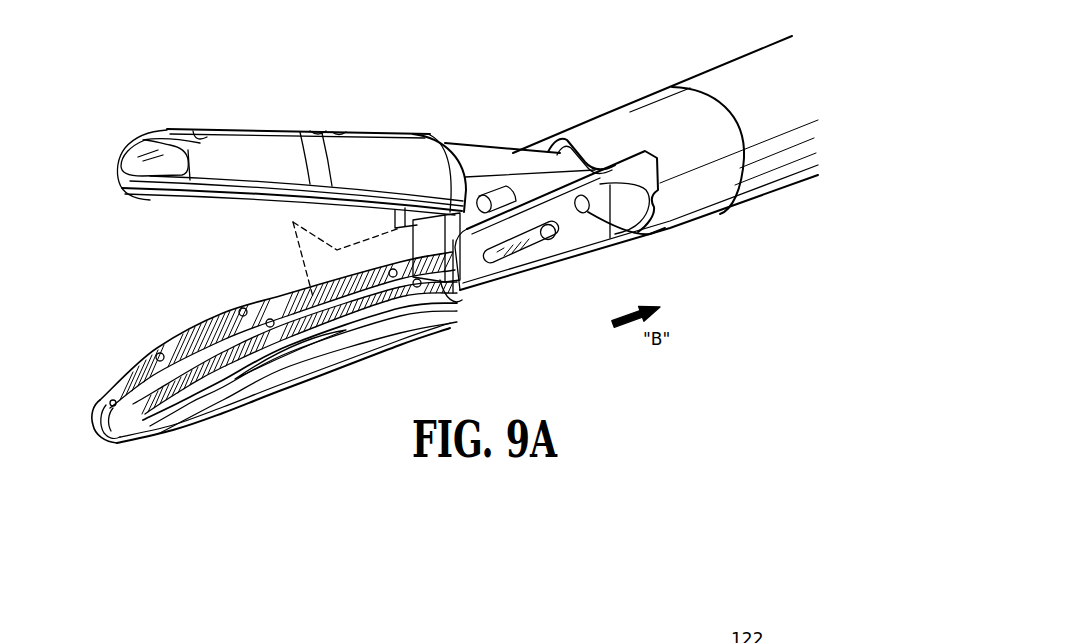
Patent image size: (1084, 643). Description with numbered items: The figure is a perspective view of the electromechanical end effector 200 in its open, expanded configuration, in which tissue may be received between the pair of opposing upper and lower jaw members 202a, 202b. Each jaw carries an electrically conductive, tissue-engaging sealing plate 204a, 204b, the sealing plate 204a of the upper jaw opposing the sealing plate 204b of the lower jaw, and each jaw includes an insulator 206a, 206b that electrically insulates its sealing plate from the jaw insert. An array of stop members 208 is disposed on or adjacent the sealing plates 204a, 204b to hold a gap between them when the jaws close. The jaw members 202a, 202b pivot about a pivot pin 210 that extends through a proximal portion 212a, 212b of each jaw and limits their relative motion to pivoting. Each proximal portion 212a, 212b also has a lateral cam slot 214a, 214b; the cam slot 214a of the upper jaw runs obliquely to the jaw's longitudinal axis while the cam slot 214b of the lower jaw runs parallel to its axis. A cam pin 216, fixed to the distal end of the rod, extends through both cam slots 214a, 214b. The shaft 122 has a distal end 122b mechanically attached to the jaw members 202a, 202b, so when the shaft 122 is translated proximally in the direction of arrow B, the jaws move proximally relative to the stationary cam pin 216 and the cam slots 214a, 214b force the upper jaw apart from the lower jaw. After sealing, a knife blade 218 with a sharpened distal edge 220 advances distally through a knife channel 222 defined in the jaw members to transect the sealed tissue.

The electromechanical end effector 200 is at (332, 82).
The upper jaw member 202a is at (223, 120).
The lower jaw member 202b is at (156, 446).
The sealing plate 204a is at (150, 200).
The sealing plate 204b is at (112, 388).
The insulator 206a is at (360, 133).
The insulator 206b is at (265, 373).
The stop members 208 is at (195, 330).
The pivot pin 210 is at (650, 235).
The proximal portion 212a is at (523, 187).
The proximal portion 212b is at (537, 262).
The lateral cam slot 214a is at (493, 190).
The lateral cam slot 214b is at (497, 257).
The cam pin 216 is at (588, 212).
The knife blade 218 is at (293, 222).
The sharpened distal edge 220 is at (302, 262).
The knife channel 222 is at (180, 370).
The shaft 122 is at (746, 45).
The distal end of shaft 122b is at (598, 133).